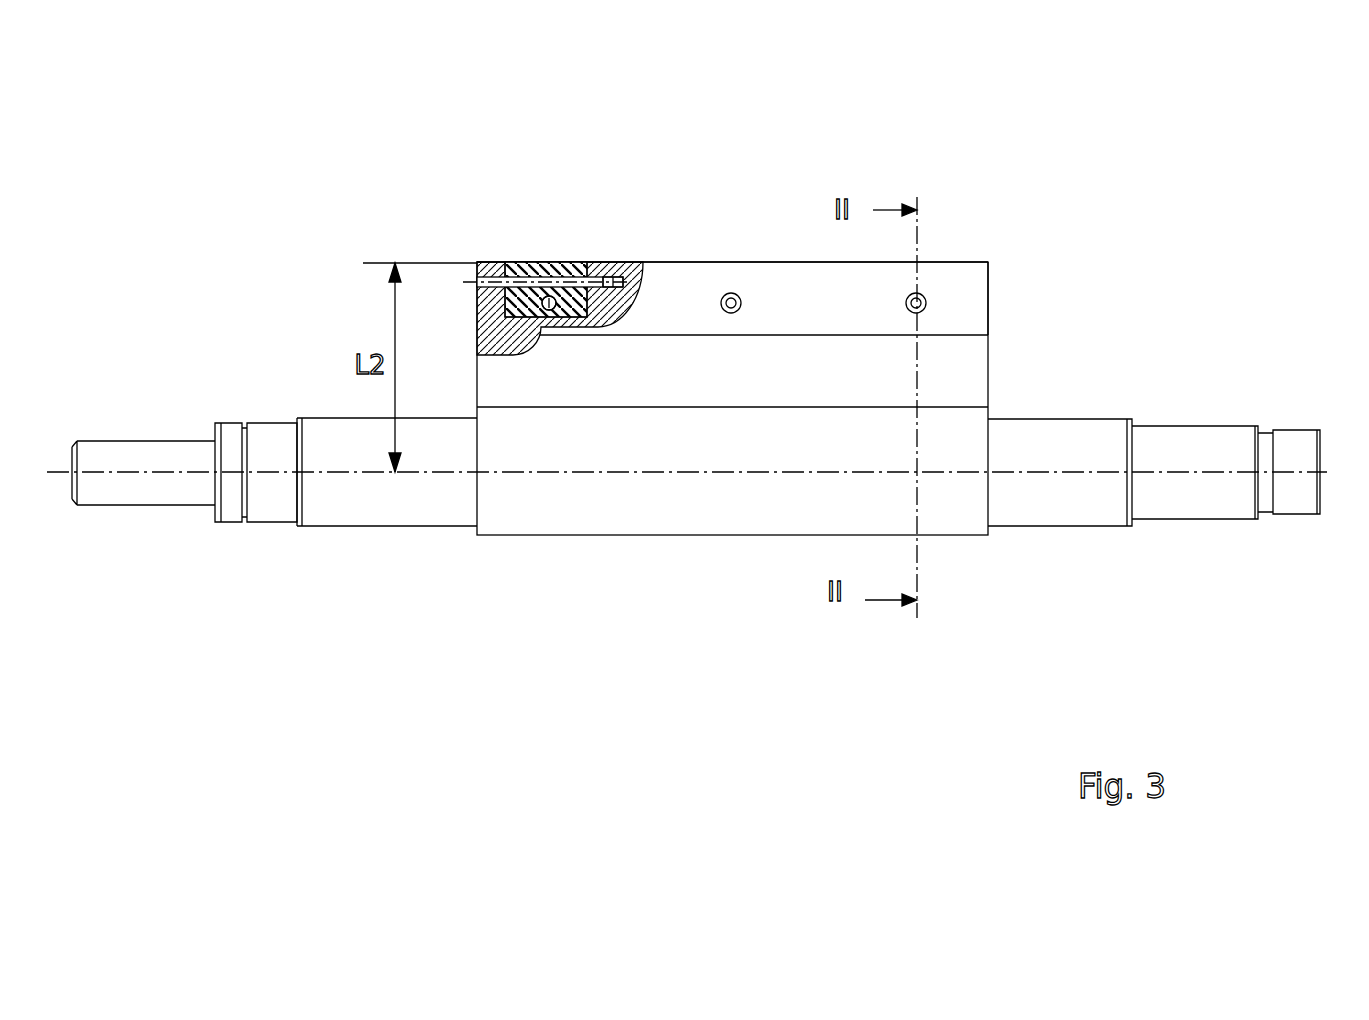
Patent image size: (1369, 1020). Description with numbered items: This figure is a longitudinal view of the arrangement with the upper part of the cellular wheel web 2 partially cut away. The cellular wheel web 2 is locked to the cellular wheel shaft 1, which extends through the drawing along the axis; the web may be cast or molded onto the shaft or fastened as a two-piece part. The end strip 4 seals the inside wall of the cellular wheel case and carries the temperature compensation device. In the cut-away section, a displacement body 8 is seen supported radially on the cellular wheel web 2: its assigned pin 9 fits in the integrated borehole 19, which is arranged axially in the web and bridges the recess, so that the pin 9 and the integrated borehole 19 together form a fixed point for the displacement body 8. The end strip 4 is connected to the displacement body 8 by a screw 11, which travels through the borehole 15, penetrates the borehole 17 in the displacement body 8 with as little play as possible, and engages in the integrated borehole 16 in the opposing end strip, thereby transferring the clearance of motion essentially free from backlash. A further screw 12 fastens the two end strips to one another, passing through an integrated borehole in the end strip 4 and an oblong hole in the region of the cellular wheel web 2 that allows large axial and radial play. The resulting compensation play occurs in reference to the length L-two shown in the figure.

The cellular wheel shaft 1 is at (1074, 437).
The cellular wheel web 2 is at (963, 368).
The end strip 4 is at (965, 287).
The displacement body 8 is at (513, 265).
The pin 9 is at (551, 296).
The screw 11 is at (920, 292).
The screw 12 is at (731, 292).
The borehole 15 is at (562, 490).
The integrated borehole 16 is at (551, 310).
The borehole 17 is at (546, 289).
The integrated borehole 19 is at (614, 268).